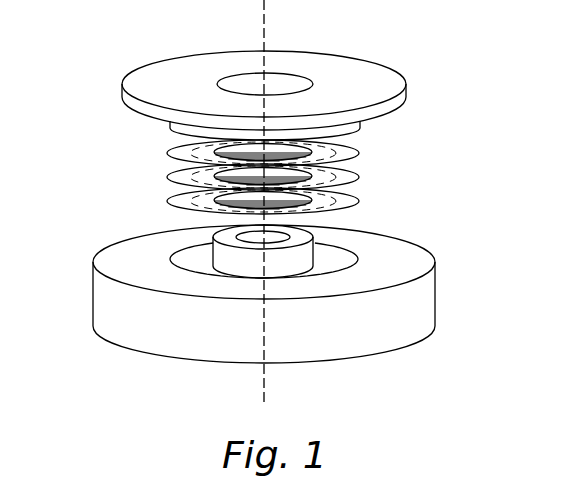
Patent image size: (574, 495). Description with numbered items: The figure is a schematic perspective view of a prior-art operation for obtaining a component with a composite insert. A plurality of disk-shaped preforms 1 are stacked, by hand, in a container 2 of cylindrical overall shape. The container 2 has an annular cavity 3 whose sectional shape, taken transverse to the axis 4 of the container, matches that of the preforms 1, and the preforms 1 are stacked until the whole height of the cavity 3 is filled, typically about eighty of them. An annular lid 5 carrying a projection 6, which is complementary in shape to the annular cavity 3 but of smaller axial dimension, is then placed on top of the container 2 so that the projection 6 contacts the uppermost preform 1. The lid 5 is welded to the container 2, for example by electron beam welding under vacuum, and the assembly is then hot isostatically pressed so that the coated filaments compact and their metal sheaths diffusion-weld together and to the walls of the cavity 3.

The preform 1 is at (355, 167).
The container 2 is at (116, 232).
The annular cavity 3 is at (332, 258).
The axis 4 is at (265, 2).
The annular lid 5 is at (362, 77).
The projection 6 is at (190, 133).